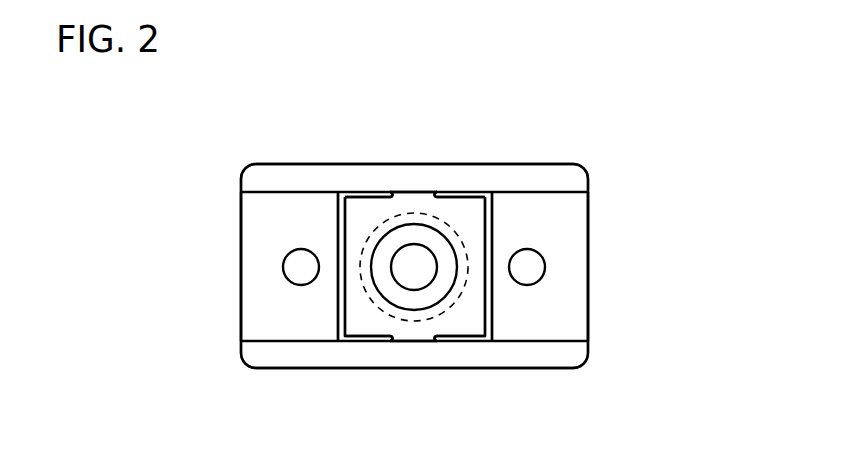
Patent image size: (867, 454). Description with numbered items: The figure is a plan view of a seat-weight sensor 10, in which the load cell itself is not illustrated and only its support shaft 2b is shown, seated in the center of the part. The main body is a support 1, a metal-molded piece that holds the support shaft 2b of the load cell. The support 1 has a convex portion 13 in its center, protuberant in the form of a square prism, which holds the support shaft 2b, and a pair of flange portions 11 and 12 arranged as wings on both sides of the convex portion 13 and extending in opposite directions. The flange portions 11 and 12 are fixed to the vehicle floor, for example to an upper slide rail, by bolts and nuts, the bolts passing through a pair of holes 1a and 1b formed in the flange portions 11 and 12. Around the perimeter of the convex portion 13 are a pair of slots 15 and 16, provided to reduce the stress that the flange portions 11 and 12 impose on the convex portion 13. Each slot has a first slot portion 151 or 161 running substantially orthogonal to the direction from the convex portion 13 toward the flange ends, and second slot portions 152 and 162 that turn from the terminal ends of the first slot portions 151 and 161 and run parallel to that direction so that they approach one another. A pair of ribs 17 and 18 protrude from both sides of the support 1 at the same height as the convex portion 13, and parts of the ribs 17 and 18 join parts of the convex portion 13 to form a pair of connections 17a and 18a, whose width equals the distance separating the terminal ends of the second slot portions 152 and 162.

The support 1 is at (241, 259).
The hole 1a is at (530, 274).
The hole 1b is at (300, 273).
The support shaft 2b is at (408, 311).
The seat-weight sensor 10 is at (700, 165).
The flange portion 11 is at (568, 213).
The flange portion 12 is at (253, 220).
The convex portion 13 is at (354, 211).
The slot 15 is at (494, 218).
The first slot portion 151 is at (493, 300).
The second slot portion 152 is at (467, 193).
The slot 16 is at (340, 318).
The first slot portion 161 is at (337, 228).
The second slot portion 162 is at (368, 193).
The rib 17 is at (262, 182).
The connection 17a is at (412, 193).
The rib 18 is at (282, 358).
The connection 18a is at (415, 339).